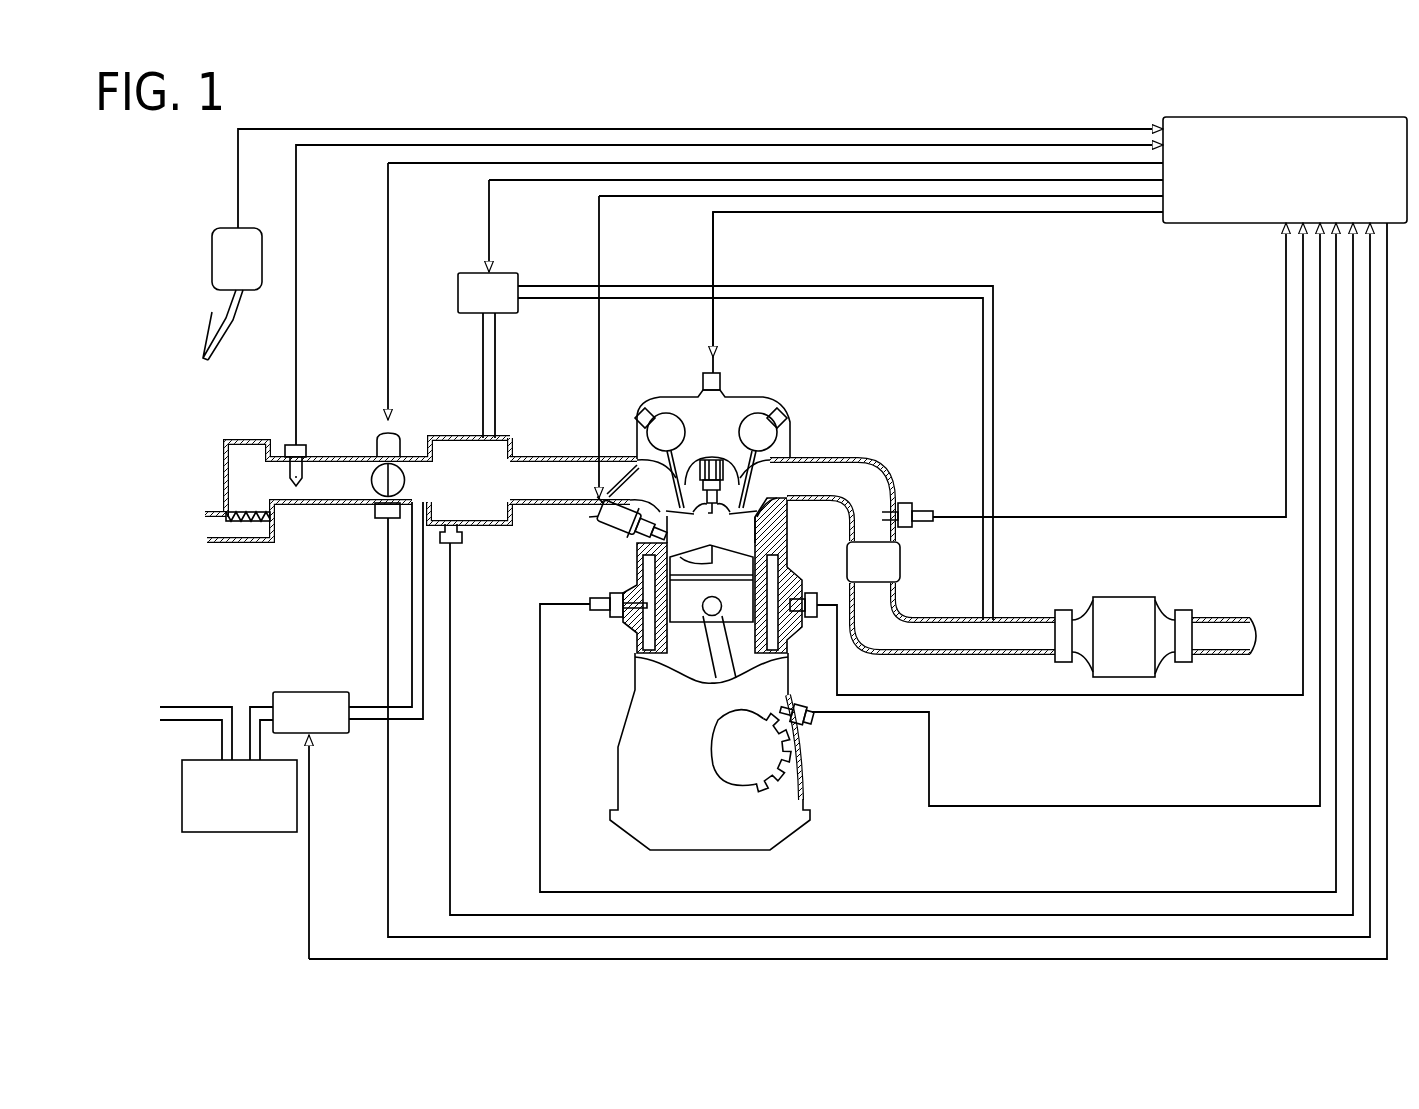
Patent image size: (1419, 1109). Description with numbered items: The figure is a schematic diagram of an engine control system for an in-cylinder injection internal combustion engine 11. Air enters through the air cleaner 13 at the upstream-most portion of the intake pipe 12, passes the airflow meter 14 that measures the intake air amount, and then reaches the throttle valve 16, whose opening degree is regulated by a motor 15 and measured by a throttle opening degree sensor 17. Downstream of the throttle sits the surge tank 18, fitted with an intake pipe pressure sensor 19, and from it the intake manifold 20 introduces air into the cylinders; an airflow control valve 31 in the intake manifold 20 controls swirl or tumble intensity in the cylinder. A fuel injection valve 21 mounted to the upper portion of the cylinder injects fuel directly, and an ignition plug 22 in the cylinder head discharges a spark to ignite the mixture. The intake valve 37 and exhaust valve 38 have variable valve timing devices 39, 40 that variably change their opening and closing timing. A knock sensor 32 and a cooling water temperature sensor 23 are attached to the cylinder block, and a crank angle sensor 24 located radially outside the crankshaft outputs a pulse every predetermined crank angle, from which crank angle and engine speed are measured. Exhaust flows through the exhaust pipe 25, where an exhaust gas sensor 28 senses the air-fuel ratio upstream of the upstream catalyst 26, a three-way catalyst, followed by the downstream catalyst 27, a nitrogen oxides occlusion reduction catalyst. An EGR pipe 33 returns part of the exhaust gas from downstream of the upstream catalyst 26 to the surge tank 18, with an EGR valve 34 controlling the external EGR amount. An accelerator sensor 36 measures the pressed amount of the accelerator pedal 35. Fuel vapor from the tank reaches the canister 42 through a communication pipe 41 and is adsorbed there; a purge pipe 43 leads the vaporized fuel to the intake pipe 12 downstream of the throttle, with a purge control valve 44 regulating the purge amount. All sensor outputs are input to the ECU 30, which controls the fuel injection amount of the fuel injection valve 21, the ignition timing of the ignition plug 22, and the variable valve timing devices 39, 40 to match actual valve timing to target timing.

The in-cylinder injection internal combustion engine 11 is at (723, 440).
The intake pipe 12 is at (337, 456).
The air cleaner 13 is at (241, 527).
The airflow meter 14 is at (284, 447).
The motor 15 is at (382, 430).
The throttle valve 16 is at (398, 477).
The throttle opening degree sensor 17 is at (381, 519).
The surge tank 18 is at (500, 524).
The intake pipe pressure sensor 19 is at (458, 545).
The intake manifold 20 is at (549, 457).
The fuel injection valve 21 is at (590, 534).
The ignition plug 22 is at (724, 392).
The cooling water temperature sensor 23 is at (612, 618).
The crank angle sensor 24 is at (812, 724).
The exhaust pipe 25 is at (878, 458).
The upstream catalyst 26 is at (901, 560).
The downstream catalyst 27 is at (1123, 597).
The exhaust gas sensor 28 is at (903, 502).
The engine control unit (ECU) 30 is at (1215, 223).
The airflow control valve 31 is at (621, 466).
The knock sensor 32 is at (810, 592).
The EGR pipe 33 is at (552, 286).
The EGR valve 34 is at (462, 273).
The accelerator pedal 35 is at (207, 340).
The accelerator sensor 36 is at (247, 227).
The intake valve 37 is at (628, 560).
The exhaust valve 38 is at (801, 497).
The intake variable valve timing device 39 is at (666, 424).
The exhaust variable valve timing device 40 is at (762, 432).
The communication pipe 41 is at (188, 707).
The canister 42 is at (242, 832).
The purge pipe 43 is at (360, 707).
The purge control valve 44 is at (300, 692).